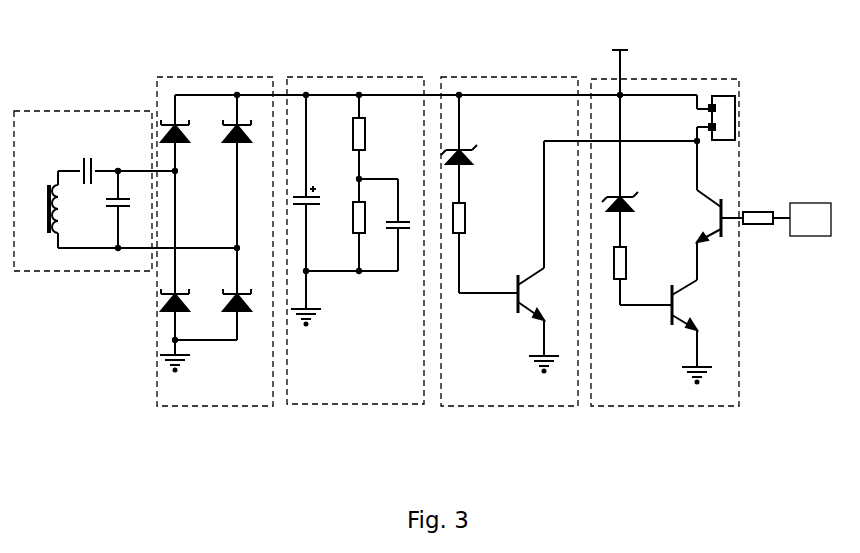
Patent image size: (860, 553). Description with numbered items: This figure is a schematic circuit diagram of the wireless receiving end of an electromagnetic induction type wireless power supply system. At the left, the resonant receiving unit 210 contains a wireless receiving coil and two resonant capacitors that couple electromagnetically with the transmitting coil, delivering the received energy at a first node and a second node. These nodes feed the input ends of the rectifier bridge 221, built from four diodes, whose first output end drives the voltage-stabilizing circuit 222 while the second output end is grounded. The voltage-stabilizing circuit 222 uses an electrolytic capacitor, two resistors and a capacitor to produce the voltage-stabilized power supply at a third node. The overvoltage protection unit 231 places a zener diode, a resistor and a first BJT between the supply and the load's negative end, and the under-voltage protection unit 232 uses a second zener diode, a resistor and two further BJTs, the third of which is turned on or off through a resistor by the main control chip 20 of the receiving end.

The resonant receiving unit 210 is at (72, 271).
The rectifier bridge 221 is at (208, 407).
The voltage-stabilizing circuit 222 is at (360, 407).
The overvoltage protection unit 231 is at (510, 407).
The under-voltage protection unit 232 is at (660, 407).
The main control chip 20 is at (812, 236).